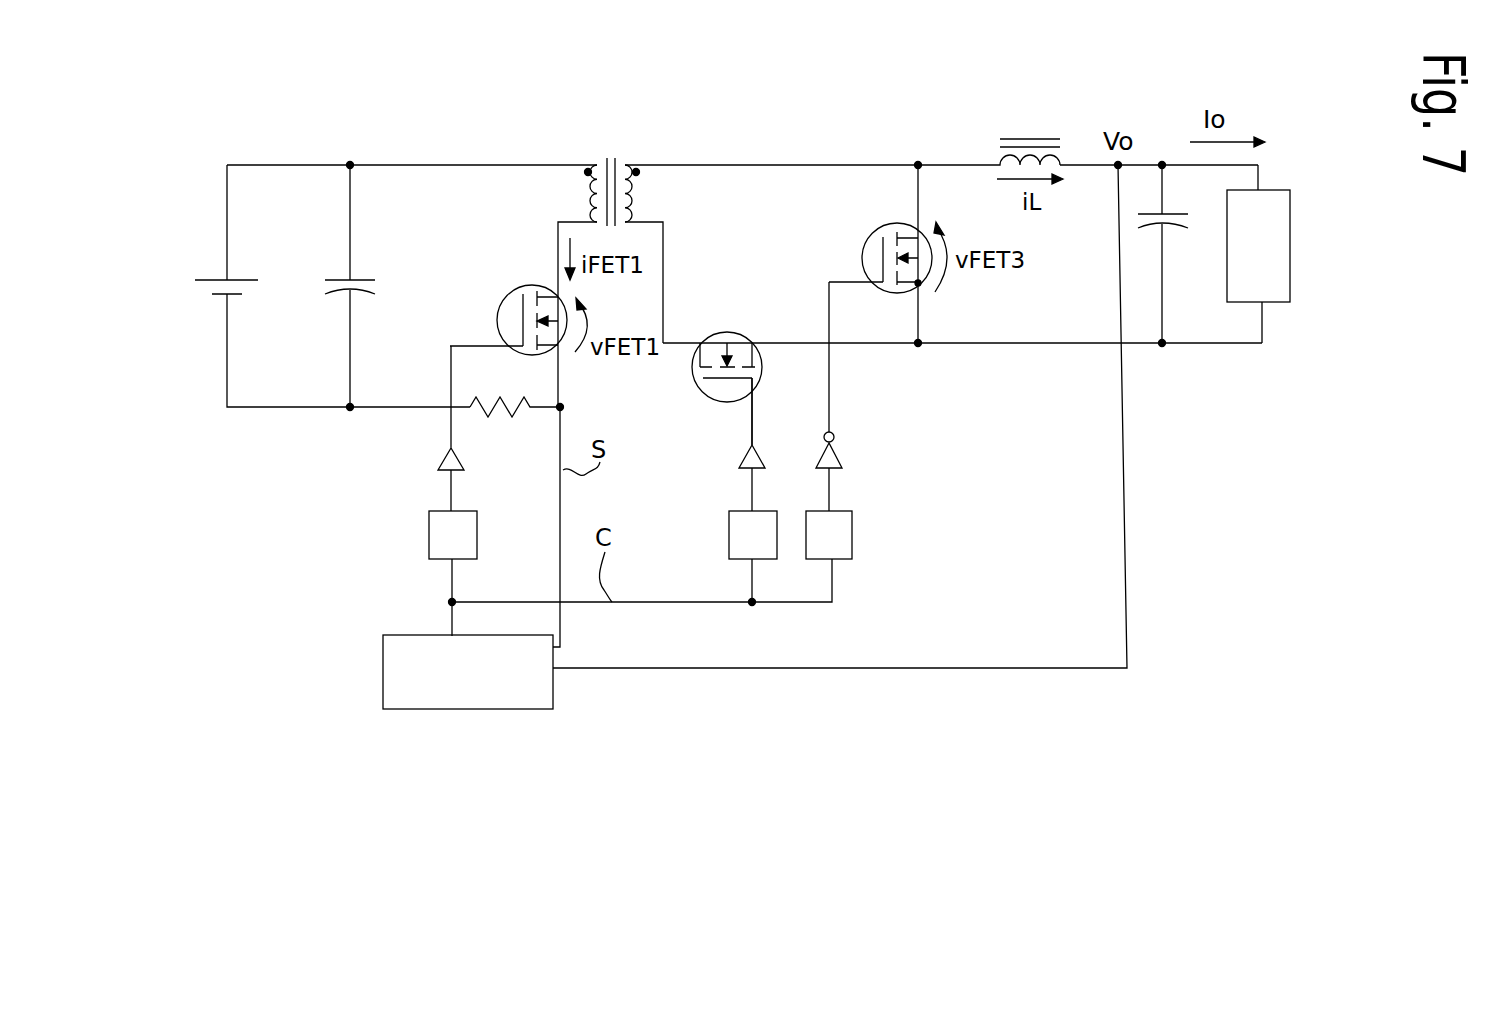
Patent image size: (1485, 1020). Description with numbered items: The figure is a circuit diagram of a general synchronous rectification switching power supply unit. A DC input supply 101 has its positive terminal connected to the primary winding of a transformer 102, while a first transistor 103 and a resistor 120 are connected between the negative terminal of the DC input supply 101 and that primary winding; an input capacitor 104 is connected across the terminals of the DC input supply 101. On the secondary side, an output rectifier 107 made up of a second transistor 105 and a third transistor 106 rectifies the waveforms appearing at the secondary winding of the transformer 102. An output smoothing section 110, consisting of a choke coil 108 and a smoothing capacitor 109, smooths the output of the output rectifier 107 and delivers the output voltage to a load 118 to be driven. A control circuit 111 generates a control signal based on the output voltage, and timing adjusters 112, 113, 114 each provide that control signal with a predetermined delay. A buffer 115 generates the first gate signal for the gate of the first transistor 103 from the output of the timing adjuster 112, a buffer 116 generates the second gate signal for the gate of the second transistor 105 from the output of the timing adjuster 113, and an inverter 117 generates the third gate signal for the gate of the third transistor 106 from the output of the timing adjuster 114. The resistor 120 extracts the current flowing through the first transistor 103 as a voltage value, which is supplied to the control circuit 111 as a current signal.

The DC input supply 101 is at (224, 278).
The transformer 102 is at (610, 160).
The first transistor 103 is at (507, 290).
The input capacitor 104 is at (373, 280).
The second transistor 105 is at (733, 333).
The third transistor 106 is at (863, 250).
The output rectifier 107 is at (816, 136).
The choke coil 108 is at (997, 160).
The smoothing capacitor 109 is at (1178, 222).
The output smoothing section 110 is at (1038, 118).
The control circuit 111 is at (383, 672).
The timing adjuster 112 is at (477, 540).
The timing adjuster 113 is at (729, 530).
The timing adjuster 114 is at (890, 538).
The buffer 115 is at (465, 460).
The buffer 116 is at (746, 455).
The inverter 117 is at (841, 446).
The load 118 is at (1290, 232).
The resistor 120 is at (480, 399).